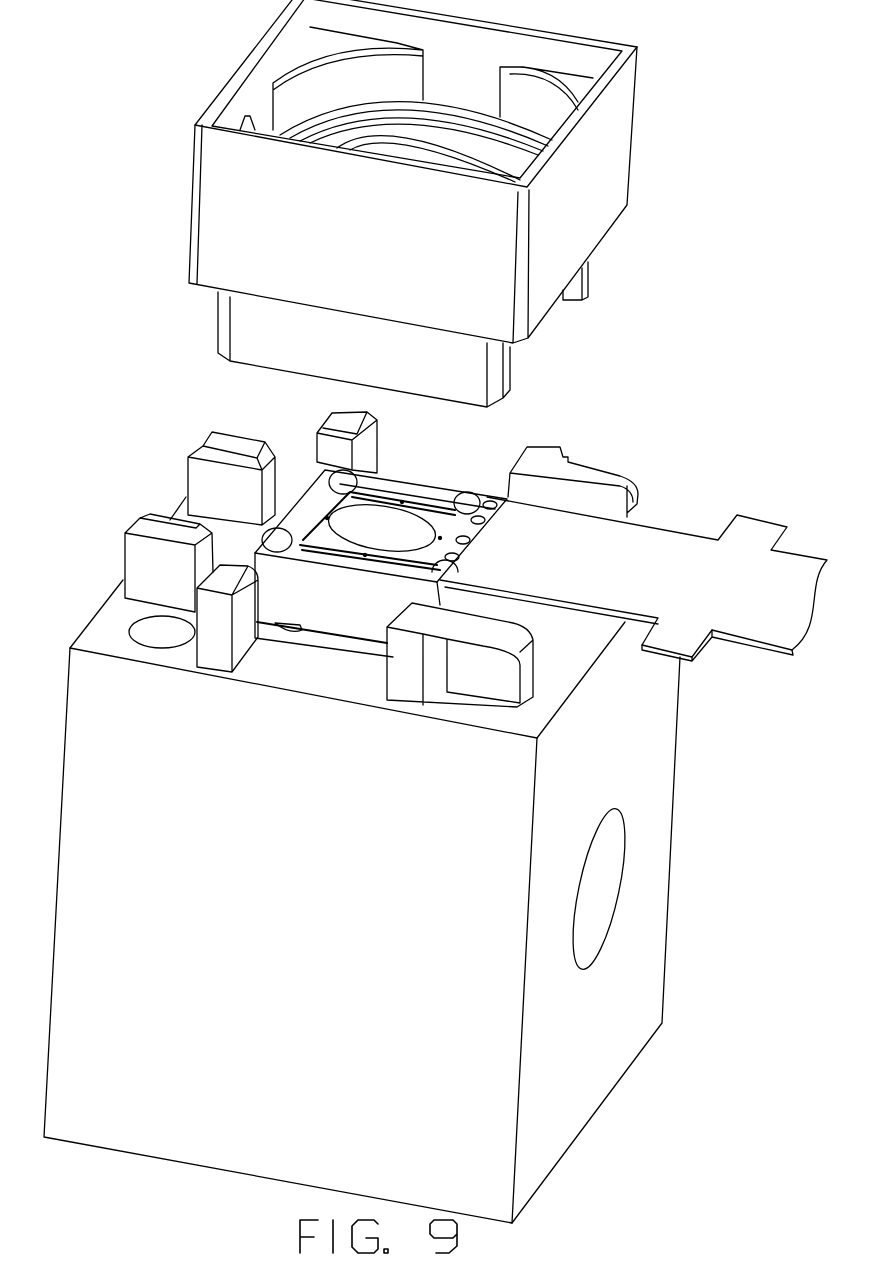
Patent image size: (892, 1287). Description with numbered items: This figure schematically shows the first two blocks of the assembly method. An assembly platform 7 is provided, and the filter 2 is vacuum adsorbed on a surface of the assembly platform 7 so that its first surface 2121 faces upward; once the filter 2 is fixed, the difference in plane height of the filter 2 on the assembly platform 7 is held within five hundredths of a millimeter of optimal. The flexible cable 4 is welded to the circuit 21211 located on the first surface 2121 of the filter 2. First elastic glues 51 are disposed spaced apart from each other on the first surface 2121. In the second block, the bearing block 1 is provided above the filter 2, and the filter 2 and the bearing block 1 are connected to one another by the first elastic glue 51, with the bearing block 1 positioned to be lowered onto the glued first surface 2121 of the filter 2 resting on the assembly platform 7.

The bearing block 1 is at (210, 216).
The filter 2 is at (314, 530).
The first surface 2121 is at (403, 520).
The circuit 21211 is at (363, 500).
The flexible cable 4 is at (657, 547).
The first elastic glue 51 is at (273, 537).
The assembly platform 7 is at (90, 715).